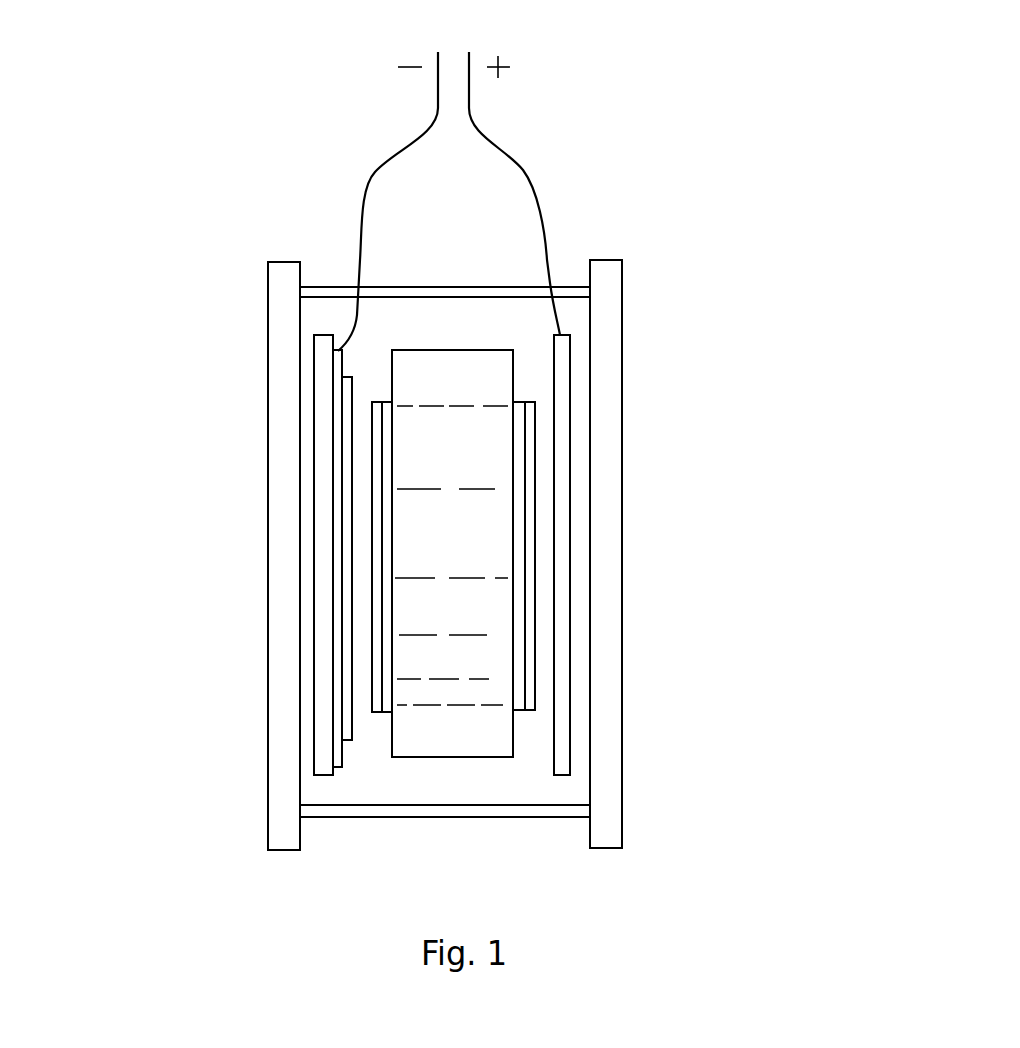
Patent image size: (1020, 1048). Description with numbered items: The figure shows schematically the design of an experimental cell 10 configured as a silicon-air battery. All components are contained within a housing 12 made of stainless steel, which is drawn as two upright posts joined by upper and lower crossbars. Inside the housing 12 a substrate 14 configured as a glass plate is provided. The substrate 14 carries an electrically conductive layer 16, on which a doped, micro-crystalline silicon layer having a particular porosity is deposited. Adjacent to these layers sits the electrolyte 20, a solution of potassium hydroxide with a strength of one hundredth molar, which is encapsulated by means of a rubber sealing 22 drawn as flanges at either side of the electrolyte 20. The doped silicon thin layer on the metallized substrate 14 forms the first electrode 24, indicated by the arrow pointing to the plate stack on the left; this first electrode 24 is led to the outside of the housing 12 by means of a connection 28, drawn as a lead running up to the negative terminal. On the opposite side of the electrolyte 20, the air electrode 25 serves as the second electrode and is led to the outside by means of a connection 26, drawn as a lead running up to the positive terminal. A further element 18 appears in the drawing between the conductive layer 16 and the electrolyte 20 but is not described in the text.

The experimental cell 10 is at (645, 163).
The housing 12 is at (605, 329).
The substrate 14 is at (325, 413).
The electrically conductive layer 16 is at (337, 493).
The spacer flange 18 is at (347, 557).
The electrolyte 20 is at (500, 602).
The rubber sealing 22 is at (532, 682).
The first electrode 24 is at (322, 363).
The air electrode 25 is at (562, 487).
The connection 26 is at (517, 157).
The connection 28 is at (372, 173).